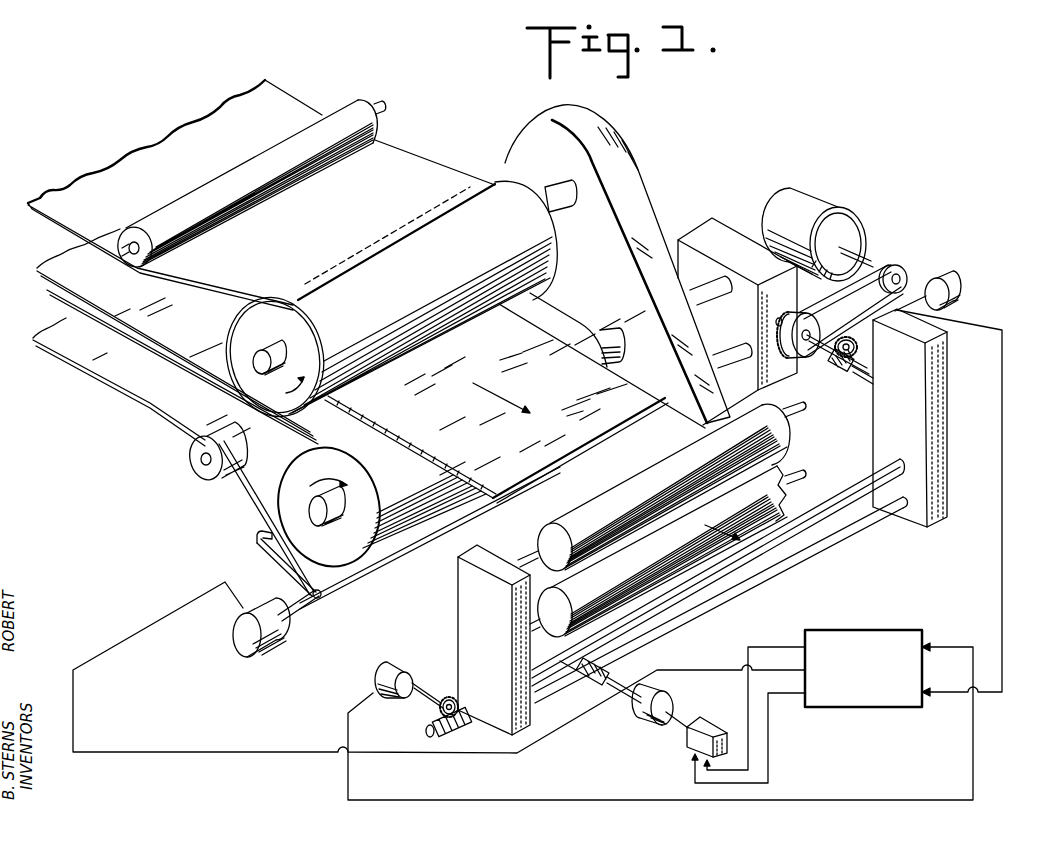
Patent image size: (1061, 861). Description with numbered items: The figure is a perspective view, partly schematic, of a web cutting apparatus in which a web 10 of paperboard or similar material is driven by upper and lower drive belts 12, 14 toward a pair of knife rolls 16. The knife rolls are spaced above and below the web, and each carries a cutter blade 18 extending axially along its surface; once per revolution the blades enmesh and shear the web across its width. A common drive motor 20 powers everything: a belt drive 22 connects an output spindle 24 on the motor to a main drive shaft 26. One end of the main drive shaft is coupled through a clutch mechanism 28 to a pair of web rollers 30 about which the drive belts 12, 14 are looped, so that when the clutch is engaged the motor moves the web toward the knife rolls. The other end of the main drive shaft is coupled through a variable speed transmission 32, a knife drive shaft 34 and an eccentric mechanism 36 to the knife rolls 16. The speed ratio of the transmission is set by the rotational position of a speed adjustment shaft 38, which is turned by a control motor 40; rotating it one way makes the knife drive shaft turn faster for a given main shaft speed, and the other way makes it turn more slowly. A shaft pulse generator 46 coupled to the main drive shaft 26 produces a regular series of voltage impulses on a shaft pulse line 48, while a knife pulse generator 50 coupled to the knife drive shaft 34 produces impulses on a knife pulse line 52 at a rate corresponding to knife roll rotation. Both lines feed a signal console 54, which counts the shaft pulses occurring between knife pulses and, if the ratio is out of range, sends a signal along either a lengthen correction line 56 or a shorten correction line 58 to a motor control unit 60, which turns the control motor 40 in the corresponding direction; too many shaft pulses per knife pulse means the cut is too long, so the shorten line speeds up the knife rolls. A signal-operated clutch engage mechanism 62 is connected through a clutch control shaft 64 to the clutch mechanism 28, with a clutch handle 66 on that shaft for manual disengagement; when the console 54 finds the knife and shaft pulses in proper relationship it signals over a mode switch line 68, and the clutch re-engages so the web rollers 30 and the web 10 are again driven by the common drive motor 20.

The web 10 is at (433, 430).
The upper drive belt 12 is at (417, 156).
The lower drive belt 14 is at (95, 376).
The knife rolls 16 is at (787, 434).
The cutter blade 18 is at (607, 547).
The common drive motor 20 is at (806, 197).
The belt drive 22 is at (786, 278).
The output spindle 24 is at (868, 256).
The main drive shaft 26 is at (860, 377).
The clutch mechanism 28 is at (695, 230).
The web rollers 30 is at (238, 332).
The variable speed transmission 32 is at (942, 430).
The knife drive shaft 34 is at (840, 497).
The eccentric mechanism 36 is at (458, 623).
The speed adjustment shaft 38 is at (847, 527).
The control motor 40 is at (659, 712).
The shaft pulse generator 46 is at (950, 283).
The shaft pulse line 48 is at (1003, 486).
The knife pulse generator 50 is at (384, 668).
The knife pulse line 52 is at (567, 800).
The signal console 54 is at (870, 637).
The lengthen correction line 56 is at (777, 646).
The shorten correction line 58 is at (786, 697).
The motor control unit 60 is at (711, 725).
The clutch engage mechanism 62 is at (273, 650).
The clutch control shaft 64 is at (381, 565).
The clutch handle 66 is at (253, 540).
The mode switch line 68 is at (160, 618).